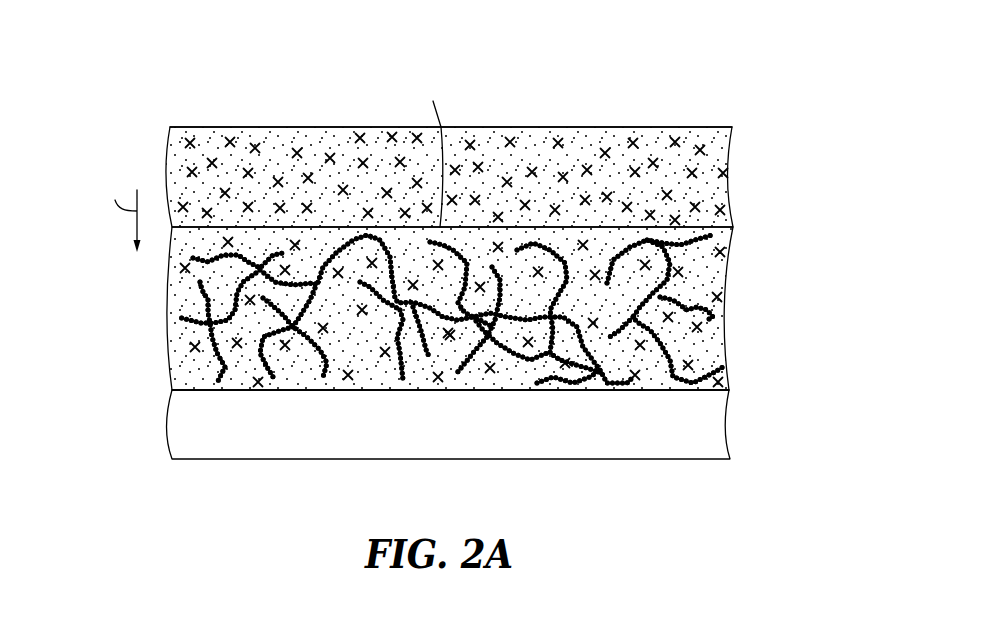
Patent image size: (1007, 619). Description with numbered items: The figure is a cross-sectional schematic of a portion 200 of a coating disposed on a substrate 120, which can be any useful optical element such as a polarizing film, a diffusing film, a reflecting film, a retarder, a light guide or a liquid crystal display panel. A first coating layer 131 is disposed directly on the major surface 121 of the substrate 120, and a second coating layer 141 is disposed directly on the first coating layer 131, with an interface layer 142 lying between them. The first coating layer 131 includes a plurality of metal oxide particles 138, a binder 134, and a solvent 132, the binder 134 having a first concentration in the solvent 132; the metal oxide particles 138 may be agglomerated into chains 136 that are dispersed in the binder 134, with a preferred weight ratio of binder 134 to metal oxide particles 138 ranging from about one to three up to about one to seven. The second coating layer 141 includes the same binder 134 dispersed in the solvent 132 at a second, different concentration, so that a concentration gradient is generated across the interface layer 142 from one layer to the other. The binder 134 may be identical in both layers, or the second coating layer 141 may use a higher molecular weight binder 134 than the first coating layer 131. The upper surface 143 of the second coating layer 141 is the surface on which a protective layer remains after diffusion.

The portion of the coating 200 is at (652, 76).
The second coating layer 141 is at (141, 143).
The interface layer 142 is at (434, 152).
The surface 143 is at (545, 127).
The binder 134 is at (702, 150).
The solvent 132 is at (717, 195).
The first coating layer 131 is at (131, 306).
The chains 136 is at (710, 316).
The metal oxide particles 138 is at (690, 250).
The substrate 120 is at (713, 430).
The major surface 121 is at (490, 384).